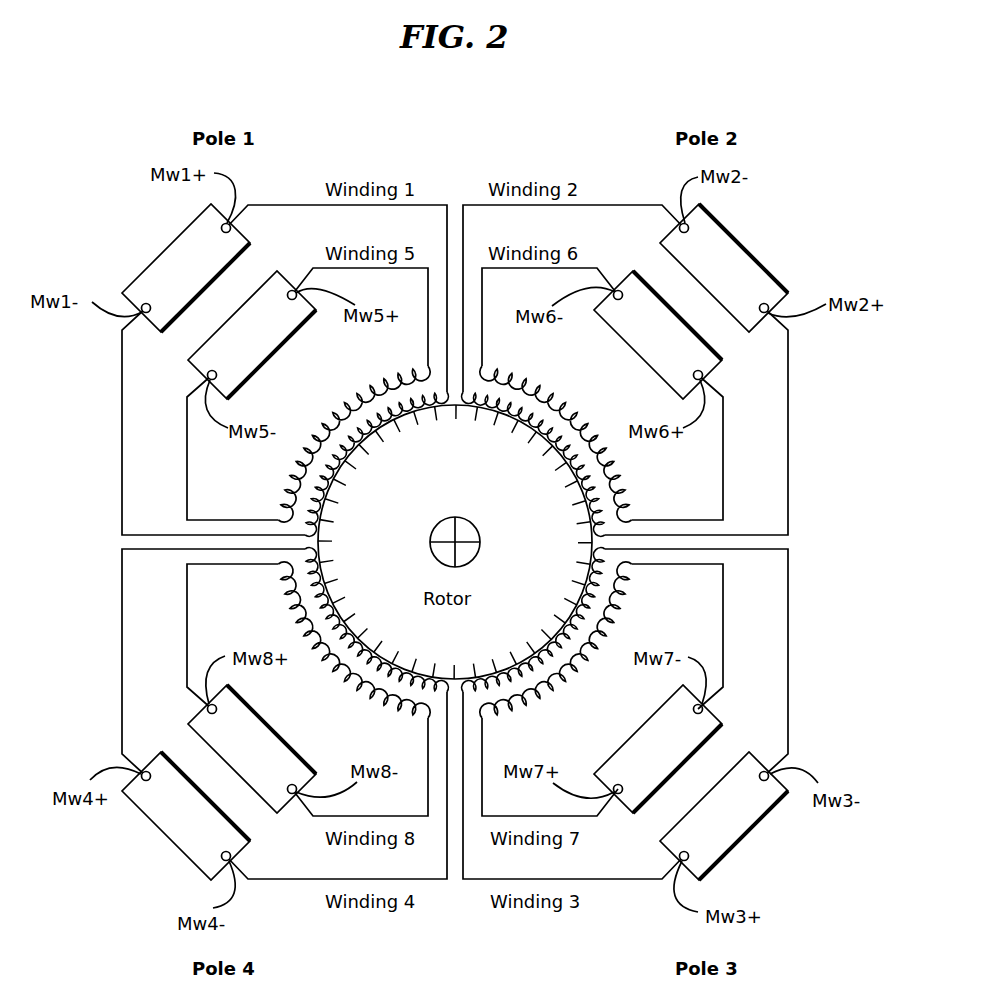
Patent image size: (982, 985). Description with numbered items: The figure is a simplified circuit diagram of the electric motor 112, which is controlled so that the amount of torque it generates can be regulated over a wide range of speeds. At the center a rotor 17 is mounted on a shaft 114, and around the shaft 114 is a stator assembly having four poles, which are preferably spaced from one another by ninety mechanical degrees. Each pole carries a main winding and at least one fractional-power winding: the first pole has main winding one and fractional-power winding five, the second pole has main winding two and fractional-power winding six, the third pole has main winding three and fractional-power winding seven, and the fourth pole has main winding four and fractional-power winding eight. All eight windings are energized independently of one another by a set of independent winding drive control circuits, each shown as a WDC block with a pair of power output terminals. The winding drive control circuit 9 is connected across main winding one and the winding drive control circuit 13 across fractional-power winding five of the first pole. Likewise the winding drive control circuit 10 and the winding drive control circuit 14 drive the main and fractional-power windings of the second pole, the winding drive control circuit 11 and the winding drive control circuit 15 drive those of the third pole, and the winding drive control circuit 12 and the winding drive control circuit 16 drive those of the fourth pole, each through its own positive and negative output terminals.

The winding drive control circuit 9 is at (174, 249).
The winding drive control circuit 10 is at (741, 241).
The winding drive control circuit 11 is at (743, 843).
The winding drive control circuit 12 is at (173, 842).
The winding drive control circuit 13 is at (222, 326).
The winding drive control circuit 14 is at (689, 327).
The winding drive control circuit 15 is at (687, 762).
The winding drive control circuit 16 is at (227, 762).
The rotor 17 is at (455, 542).
The electric motor 112 is at (681, 618).
The shaft 114 is at (429, 548).